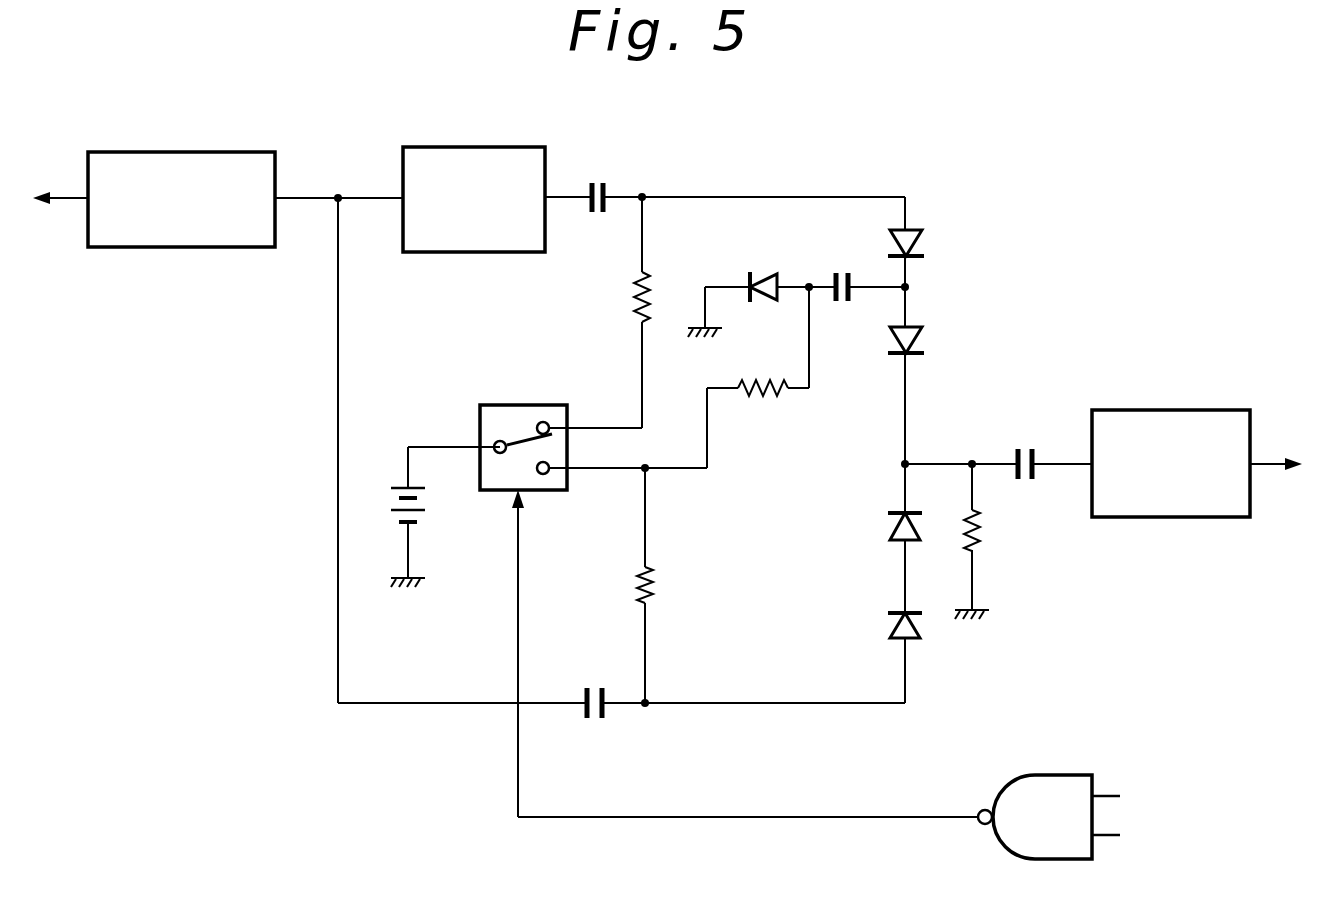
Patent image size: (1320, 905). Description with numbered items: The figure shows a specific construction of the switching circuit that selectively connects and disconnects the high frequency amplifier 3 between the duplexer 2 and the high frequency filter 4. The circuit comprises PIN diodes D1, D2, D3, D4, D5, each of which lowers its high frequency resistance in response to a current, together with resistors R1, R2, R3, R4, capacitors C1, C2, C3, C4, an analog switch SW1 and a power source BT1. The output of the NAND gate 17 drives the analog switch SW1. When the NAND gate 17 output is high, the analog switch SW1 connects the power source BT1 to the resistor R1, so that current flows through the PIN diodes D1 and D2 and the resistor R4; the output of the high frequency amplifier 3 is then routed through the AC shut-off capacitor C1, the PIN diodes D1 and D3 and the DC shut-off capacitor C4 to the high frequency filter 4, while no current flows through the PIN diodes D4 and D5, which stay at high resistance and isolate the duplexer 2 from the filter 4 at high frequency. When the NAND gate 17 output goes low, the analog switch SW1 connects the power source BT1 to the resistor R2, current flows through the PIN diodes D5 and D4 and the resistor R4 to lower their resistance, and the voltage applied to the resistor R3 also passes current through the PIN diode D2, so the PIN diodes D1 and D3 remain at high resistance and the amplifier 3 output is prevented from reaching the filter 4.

The duplexer 2 is at (163, 152).
The high frequency amplifier 3 is at (470, 147).
The high frequency filter 4 is at (1160, 410).
The NAND gate 17 is at (1058, 776).
The AC shut-off capacitor C1 is at (600, 180).
The capacitor C2 is at (595, 684).
The capacitor C3 is at (843, 280).
The DC shut-off capacitor C4 is at (1025, 442).
The resistor R1 is at (638, 295).
The resistor R2 is at (655, 590).
The resistor R3 is at (762, 396).
The resistor R4 is at (985, 532).
The PIN diode D1 is at (925, 243).
The PIN diode D2 is at (762, 280).
The PIN diode D3 is at (925, 338).
The PIN diode D4 is at (889, 518).
The PIN diode D5 is at (890, 624).
The analog switch SW1 is at (523, 427).
The power source BT1 is at (432, 503).